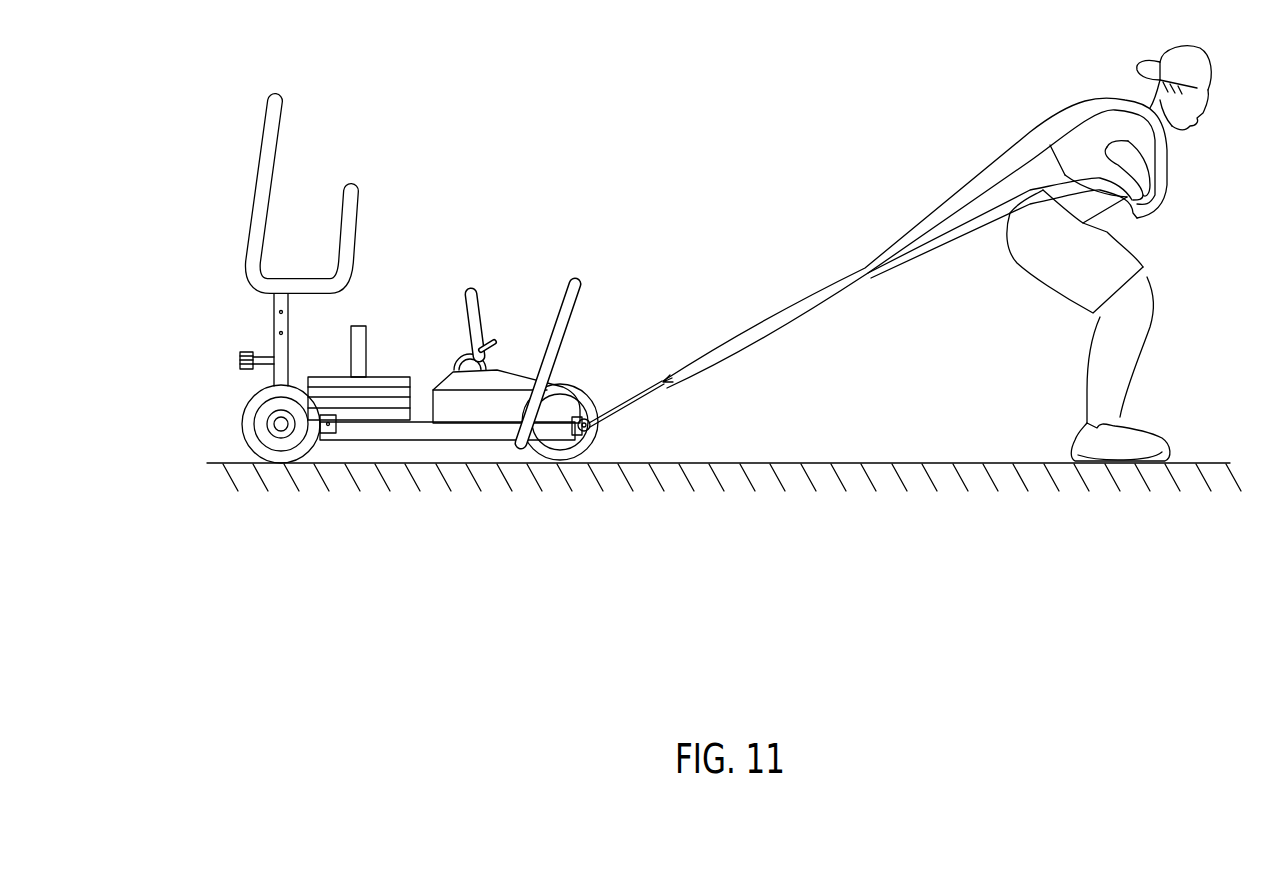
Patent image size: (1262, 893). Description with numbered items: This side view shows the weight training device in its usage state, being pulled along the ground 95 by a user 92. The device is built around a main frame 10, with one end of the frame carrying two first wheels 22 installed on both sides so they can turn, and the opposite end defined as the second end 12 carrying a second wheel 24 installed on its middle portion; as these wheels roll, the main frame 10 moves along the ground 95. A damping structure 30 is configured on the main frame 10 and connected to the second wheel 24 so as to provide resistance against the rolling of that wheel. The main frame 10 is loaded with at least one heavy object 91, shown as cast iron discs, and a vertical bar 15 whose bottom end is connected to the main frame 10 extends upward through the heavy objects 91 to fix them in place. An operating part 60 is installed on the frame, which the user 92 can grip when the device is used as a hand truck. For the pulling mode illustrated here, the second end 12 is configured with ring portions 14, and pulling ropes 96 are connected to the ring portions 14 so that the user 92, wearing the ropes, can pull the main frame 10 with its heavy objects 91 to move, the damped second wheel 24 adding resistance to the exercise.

The main frame 10 is at (418, 442).
The second end 12 is at (587, 410).
The ring portion 14 is at (585, 446).
The vertical bar 15 is at (366, 334).
The first wheel 22 is at (242, 426).
The second wheel 24 is at (565, 383).
The damping structure 30 is at (515, 369).
The operating part 60 is at (371, 219).
The heavy object 91 is at (390, 377).
The user 92 is at (1135, 248).
The ground 95 is at (845, 462).
The pulling rope 96 is at (815, 285).